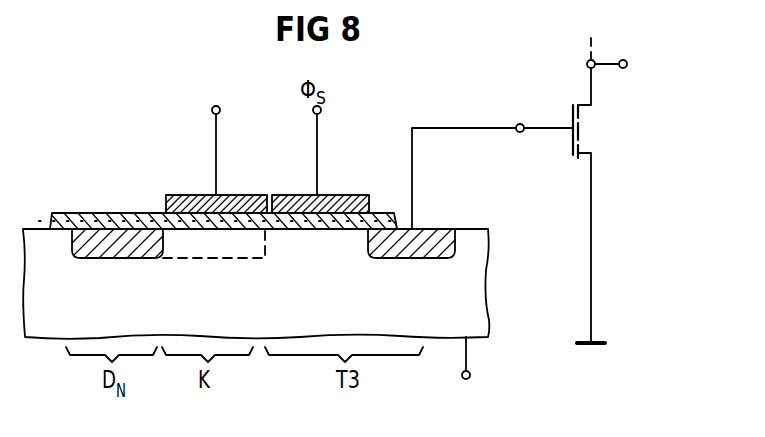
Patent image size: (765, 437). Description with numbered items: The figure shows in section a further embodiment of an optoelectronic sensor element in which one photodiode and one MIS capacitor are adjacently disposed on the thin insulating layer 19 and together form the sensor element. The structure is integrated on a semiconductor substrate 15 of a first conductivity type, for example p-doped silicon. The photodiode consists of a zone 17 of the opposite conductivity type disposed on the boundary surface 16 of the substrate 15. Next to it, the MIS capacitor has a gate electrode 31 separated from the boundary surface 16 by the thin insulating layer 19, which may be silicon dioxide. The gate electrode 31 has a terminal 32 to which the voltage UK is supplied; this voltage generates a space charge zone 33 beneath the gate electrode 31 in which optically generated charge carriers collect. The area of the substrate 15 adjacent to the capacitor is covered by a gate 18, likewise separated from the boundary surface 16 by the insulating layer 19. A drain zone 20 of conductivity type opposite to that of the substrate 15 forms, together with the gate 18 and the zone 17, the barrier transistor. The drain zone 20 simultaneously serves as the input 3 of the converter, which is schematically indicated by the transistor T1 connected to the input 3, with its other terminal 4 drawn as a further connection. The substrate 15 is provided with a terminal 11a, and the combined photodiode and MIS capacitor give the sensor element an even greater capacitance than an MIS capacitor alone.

The input 3 is at (543, 144).
The drain terminal of transistor T1 4 is at (607, 50).
The substrate terminal (U0) 11a is at (502, 365).
The semiconductor substrate 15 is at (482, 284).
The boundary surface 16 is at (467, 228).
The zone 17 is at (125, 252).
The gate 18 is at (338, 195).
The thin insulating layer 19 is at (118, 213).
The drain zone 20 is at (418, 250).
The gate electrode 31 is at (241, 195).
The terminal 32 is at (230, 135).
The space charge zone 33 is at (221, 252).
The transistor T1 is at (592, 205).